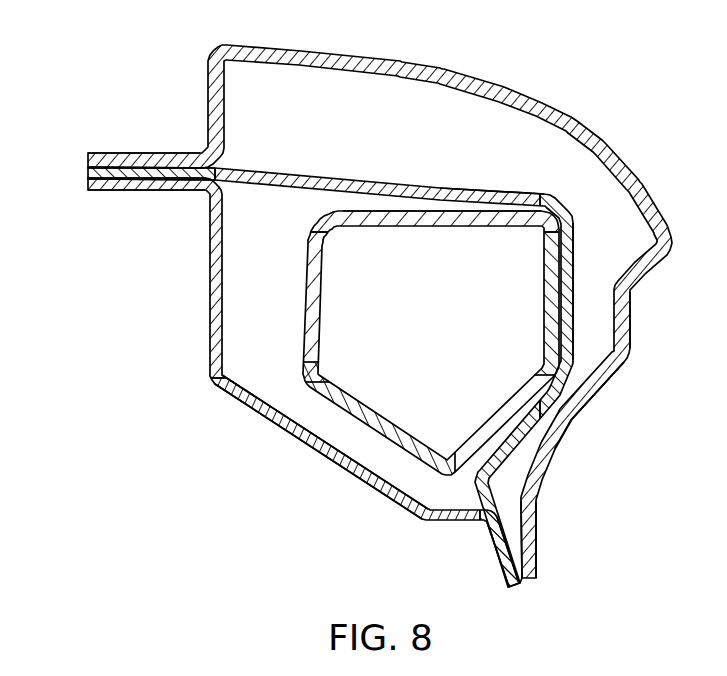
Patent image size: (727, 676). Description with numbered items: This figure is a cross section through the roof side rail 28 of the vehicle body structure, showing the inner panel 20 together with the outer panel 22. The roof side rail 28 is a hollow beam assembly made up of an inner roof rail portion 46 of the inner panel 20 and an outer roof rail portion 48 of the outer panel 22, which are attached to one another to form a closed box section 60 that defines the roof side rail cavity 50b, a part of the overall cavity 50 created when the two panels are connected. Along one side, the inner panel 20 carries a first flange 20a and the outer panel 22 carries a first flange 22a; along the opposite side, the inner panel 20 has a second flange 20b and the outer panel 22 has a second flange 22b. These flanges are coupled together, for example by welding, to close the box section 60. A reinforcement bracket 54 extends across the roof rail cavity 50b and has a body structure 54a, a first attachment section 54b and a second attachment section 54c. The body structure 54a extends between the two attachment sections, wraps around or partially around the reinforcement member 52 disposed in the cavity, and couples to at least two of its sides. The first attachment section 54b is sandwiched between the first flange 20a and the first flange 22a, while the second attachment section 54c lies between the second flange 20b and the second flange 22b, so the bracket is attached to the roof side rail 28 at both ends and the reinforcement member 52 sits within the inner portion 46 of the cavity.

The inner panel 20 is at (230, 385).
The first flange 20a is at (135, 190).
The second flange 20b is at (493, 553).
The outer panel 22 is at (597, 136).
The first flange 22a is at (135, 155).
The second flange 22b is at (533, 522).
The roof side rail 28 is at (603, 393).
The inner roof rail portion 46 is at (373, 460).
The outer roof rail portion 48 is at (607, 247).
The cavity 50 is at (453, 133).
The roof side rail cavity 50b is at (383, 117).
The reinforcement member 52 is at (300, 433).
The reinforcement bracket 54 is at (258, 168).
The body structure 54a is at (476, 192).
The first attachment section 54b is at (88, 174).
The second attachment section 54c is at (520, 585).
The box section 60 is at (630, 333).